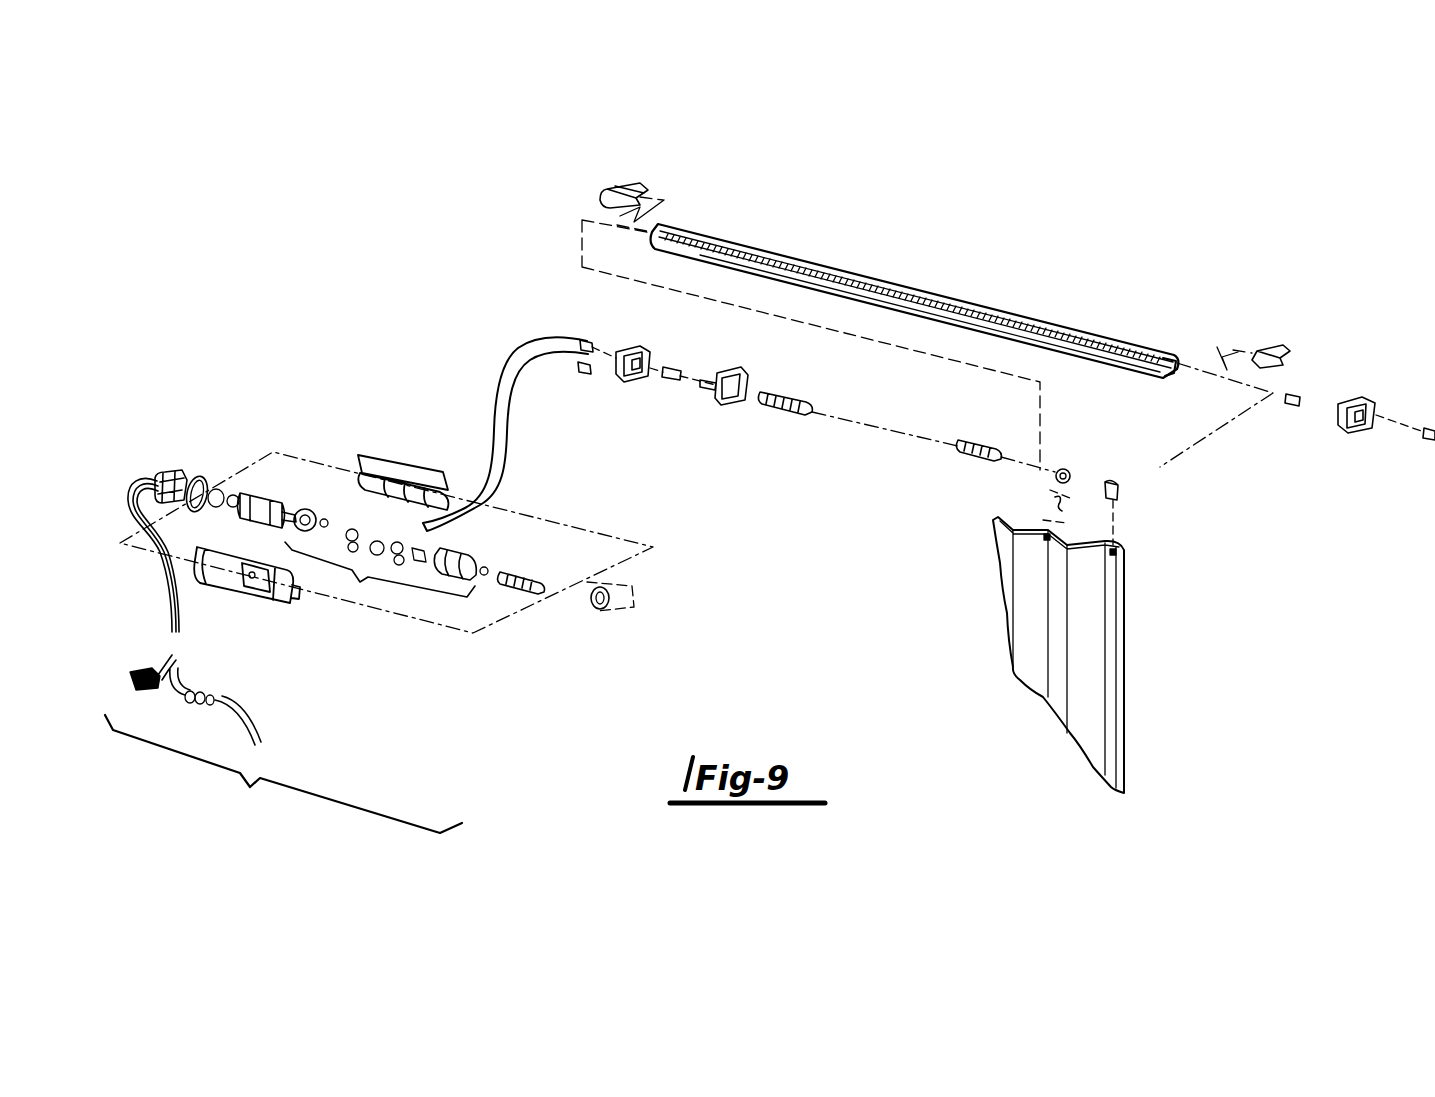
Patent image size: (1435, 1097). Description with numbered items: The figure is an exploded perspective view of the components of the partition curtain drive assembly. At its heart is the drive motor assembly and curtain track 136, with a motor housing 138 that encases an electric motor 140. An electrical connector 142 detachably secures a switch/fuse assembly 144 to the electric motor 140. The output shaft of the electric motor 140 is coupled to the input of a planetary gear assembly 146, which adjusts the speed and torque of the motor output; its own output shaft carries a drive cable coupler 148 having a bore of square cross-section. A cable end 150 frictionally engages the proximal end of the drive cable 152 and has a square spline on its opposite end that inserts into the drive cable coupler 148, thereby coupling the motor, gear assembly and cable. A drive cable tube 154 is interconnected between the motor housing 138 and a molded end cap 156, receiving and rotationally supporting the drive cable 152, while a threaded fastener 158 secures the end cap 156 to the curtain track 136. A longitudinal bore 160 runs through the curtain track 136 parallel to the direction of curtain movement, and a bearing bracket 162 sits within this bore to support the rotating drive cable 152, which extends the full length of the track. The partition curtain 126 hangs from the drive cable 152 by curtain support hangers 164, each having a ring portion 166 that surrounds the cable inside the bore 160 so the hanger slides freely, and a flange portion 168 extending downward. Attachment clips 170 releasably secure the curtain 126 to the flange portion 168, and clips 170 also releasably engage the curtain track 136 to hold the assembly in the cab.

The partition curtain 126 is at (1112, 637).
The curtain track 136 is at (862, 278).
The motor housing 138 is at (390, 463).
The electric motor 140 is at (260, 473).
The electrical connector 142 is at (168, 487).
The switch/fuse assembly 144 is at (230, 640).
The planetary gear assembly 146 is at (380, 566).
The drive cable coupler 148 is at (493, 563).
The cable end 150 is at (507, 587).
The drive cable 152 is at (777, 397).
The drive cable tube 154 is at (500, 428).
The end cap 156 is at (630, 353).
The threaded fastener 158 is at (672, 370).
The longitudinal bore 160 is at (1177, 360).
The bearing bracket 162 is at (717, 400).
The curtain support hanger 164 is at (1064, 468).
The ring portion 166 is at (1050, 498).
The flange portion 168 is at (1117, 478).
The attachment clips 170 is at (607, 184).